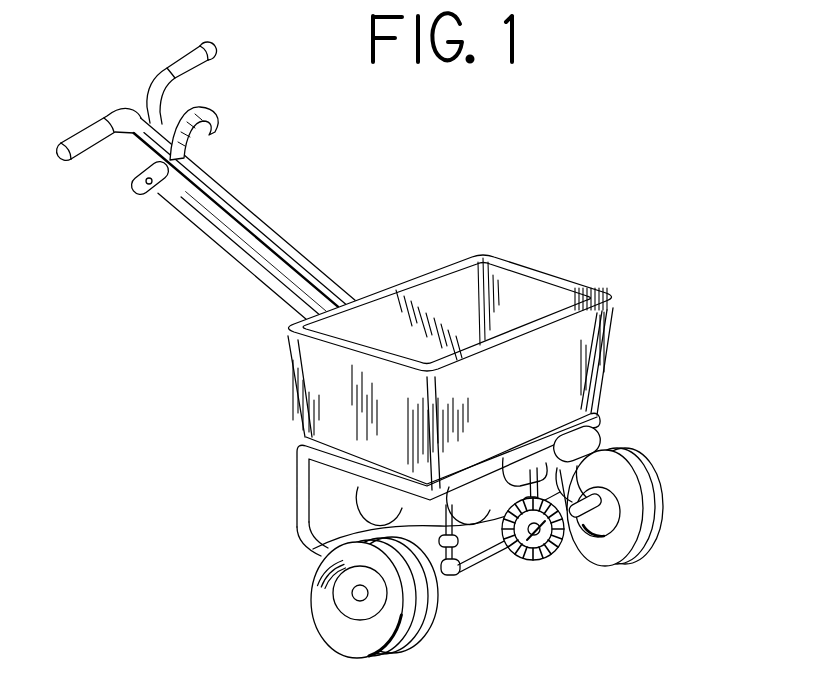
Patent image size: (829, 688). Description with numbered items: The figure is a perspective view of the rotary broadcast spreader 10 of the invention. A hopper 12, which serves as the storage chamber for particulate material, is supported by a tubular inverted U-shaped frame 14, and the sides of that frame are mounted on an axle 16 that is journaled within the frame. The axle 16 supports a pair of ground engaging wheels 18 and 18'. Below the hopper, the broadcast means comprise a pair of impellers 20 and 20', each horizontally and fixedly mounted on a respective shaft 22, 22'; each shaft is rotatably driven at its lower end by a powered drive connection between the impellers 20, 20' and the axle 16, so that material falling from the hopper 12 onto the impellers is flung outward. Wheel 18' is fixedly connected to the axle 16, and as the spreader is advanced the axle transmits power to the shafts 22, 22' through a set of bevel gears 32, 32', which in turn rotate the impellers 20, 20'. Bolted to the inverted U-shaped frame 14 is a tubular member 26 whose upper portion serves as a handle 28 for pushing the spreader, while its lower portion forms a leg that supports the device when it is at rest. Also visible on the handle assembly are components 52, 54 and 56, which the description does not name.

The rotary broadcast spreader 10 is at (600, 257).
The hopper 12 is at (583, 346).
The inverted U-shaped frame 14 is at (597, 415).
The axle 16 is at (490, 557).
The ground engaging wheel 18 is at (645, 507).
The ground engaging wheel 18' is at (325, 597).
The impeller 20 is at (602, 448).
The impeller 20' is at (355, 506).
The shaft 22 is at (613, 476).
The shaft 22' is at (350, 532).
The tubular member 26 is at (300, 252).
The handle 28 is at (88, 153).
The bevel gear 32 is at (535, 553).
The bevel gear 32' is at (458, 612).
The handle tube 52 is at (232, 256).
The clamp collar 54 is at (217, 123).
The mounting plate 56 is at (186, 172).